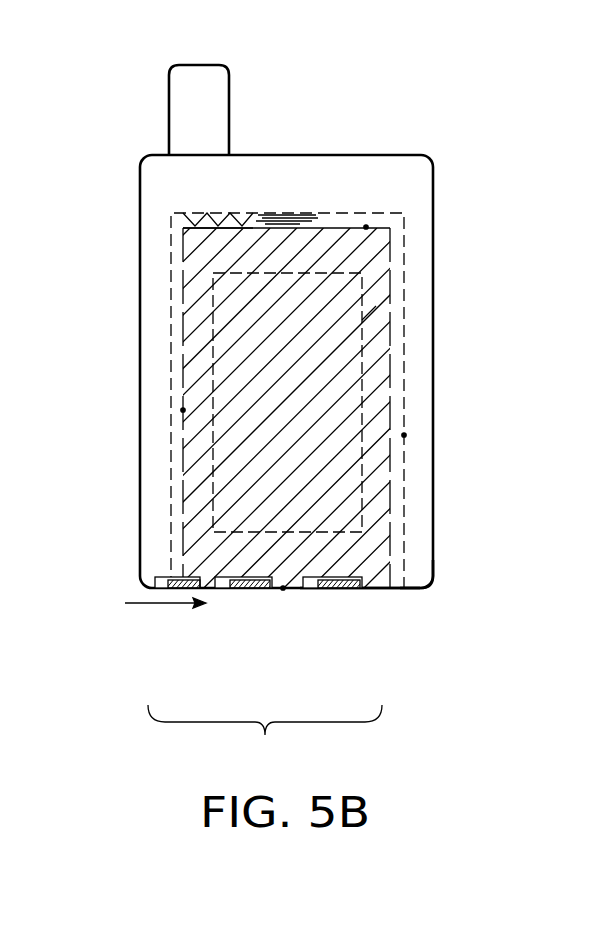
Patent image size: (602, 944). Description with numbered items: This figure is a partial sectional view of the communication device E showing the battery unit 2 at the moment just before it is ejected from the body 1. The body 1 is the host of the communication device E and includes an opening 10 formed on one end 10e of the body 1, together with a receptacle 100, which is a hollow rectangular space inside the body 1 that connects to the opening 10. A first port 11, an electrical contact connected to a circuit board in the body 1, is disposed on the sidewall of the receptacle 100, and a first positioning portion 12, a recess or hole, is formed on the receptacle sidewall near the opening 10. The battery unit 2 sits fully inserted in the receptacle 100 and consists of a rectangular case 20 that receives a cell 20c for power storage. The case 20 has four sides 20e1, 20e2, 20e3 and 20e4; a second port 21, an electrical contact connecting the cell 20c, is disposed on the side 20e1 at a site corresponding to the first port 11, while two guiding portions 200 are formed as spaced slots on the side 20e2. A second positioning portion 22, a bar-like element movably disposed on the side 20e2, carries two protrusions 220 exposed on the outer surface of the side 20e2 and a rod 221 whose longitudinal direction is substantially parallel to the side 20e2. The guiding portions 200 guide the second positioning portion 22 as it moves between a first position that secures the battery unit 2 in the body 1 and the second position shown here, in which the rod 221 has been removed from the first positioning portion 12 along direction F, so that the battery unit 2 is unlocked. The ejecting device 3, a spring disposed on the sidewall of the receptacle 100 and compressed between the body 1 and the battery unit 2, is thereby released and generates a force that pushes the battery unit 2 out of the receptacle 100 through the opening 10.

The communication device E is at (121, 67).
The direction F is at (163, 618).
The body 1 is at (433, 370).
The battery unit 2 is at (296, 414).
The ejecting device 3 is at (284, 212).
The opening 10 is at (380, 589).
The end 10e is at (415, 589).
The first port 11 is at (184, 222).
The first positioning portion 12 is at (163, 589).
The case 20 is at (390, 538).
The cell 20c is at (366, 316).
The side 20e1 is at (366, 227).
The side 20e2 is at (283, 589).
The side 20e3 is at (183, 410).
The side 20e4 is at (404, 435).
The second port 21 is at (220, 231).
The second positioning portion 22 is at (265, 735).
The receptacle 100 is at (405, 497).
The guiding portion 200 is at (223, 589).
The protrusion 220 is at (255, 589).
The rod 221 is at (192, 589).